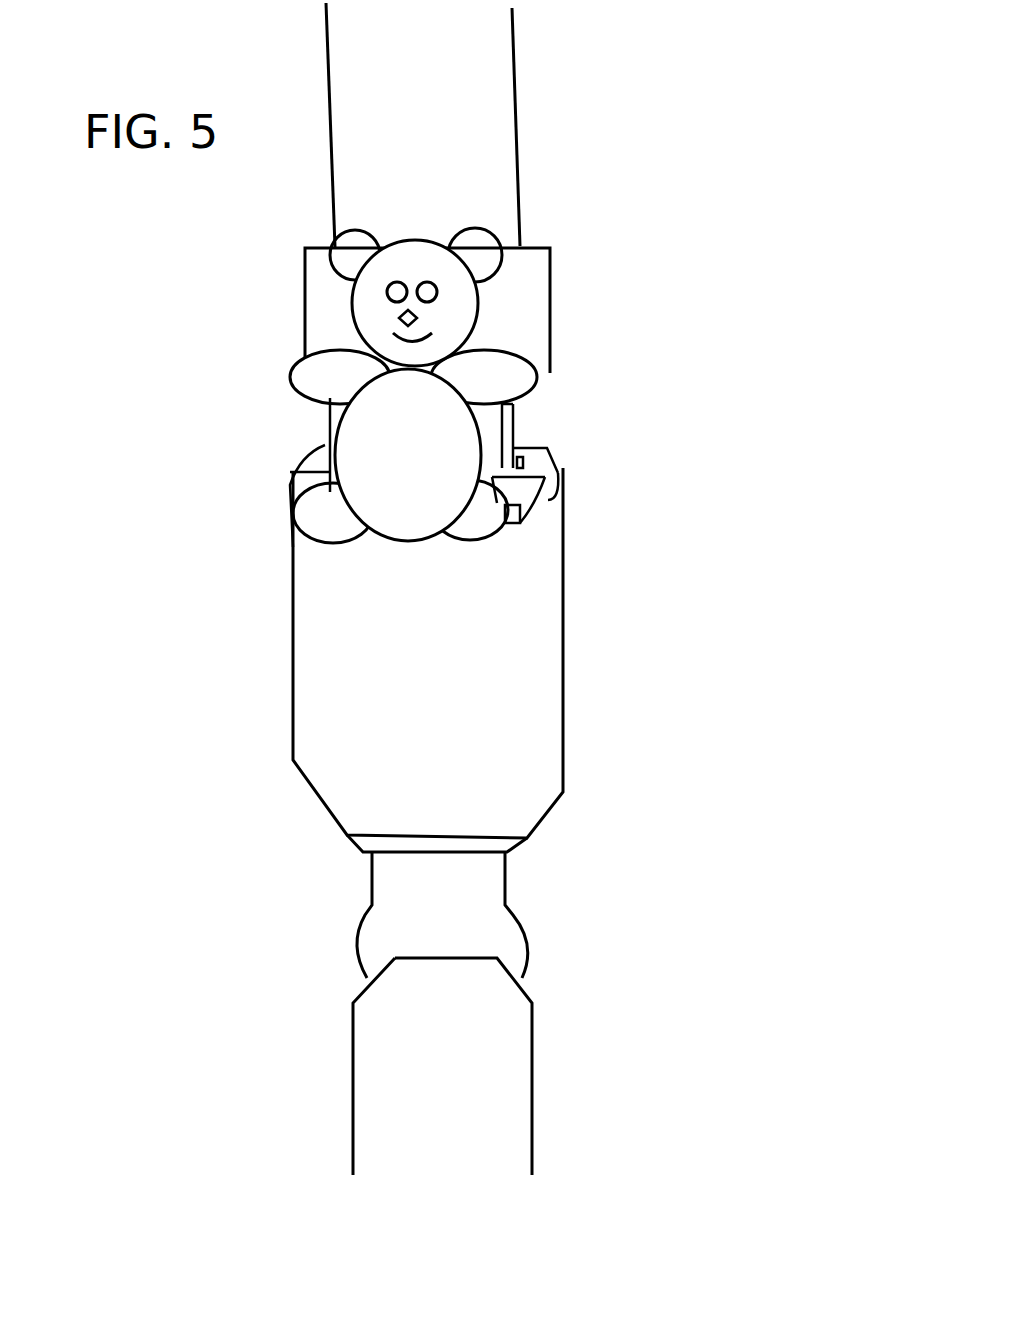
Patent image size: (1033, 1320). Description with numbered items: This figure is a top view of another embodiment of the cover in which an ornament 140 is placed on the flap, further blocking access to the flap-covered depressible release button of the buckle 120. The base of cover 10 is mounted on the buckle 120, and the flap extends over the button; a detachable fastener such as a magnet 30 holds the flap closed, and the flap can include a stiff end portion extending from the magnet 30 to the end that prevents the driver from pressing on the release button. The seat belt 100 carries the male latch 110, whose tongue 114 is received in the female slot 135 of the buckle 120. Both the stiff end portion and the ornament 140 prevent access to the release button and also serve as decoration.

The seat belt 100 is at (493, 77).
The male latch 110 is at (532, 273).
The tongue 114 is at (550, 373).
The female slot for receiving male latch 135 is at (515, 462).
The detachable fastener, such as a magnet 30 is at (515, 495).
The ornament 140 is at (378, 428).
The base of cover 10 is at (327, 623).
The buckle 120 is at (367, 842).